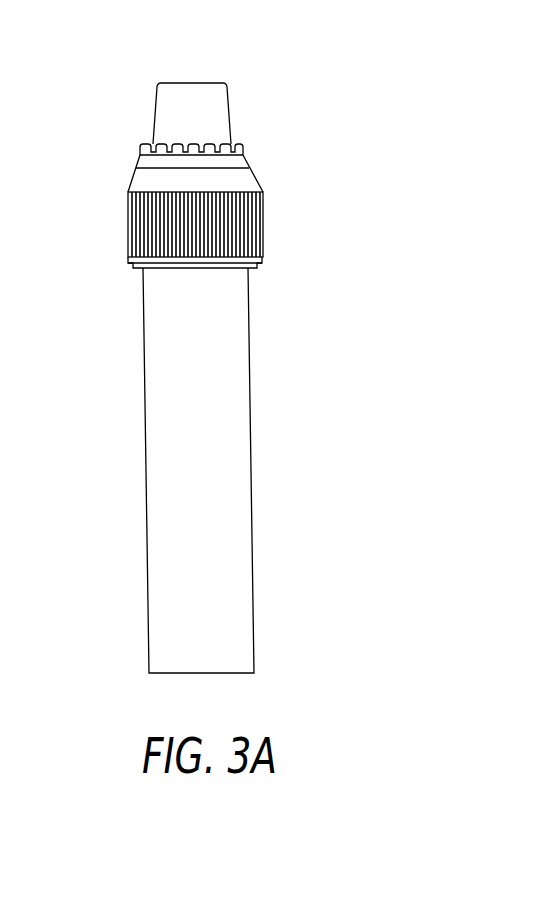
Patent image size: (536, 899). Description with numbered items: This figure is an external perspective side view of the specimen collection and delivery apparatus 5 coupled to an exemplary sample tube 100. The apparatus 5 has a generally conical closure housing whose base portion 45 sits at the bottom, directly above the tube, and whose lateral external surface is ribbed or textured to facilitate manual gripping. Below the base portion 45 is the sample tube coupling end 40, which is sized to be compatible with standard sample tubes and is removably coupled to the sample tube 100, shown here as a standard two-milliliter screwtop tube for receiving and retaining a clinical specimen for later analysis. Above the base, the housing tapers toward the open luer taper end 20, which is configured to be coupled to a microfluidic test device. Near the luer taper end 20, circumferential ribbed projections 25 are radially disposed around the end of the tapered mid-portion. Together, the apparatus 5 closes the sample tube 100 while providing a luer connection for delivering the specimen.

The specimen collection and delivery apparatus 5 is at (241, 112).
The luer taper end 20 is at (190, 82).
The ribbed projections 25 is at (147, 142).
The sample tube coupling end 40 is at (263, 256).
The base portion 45 is at (130, 222).
The sample tube 100 is at (185, 445).